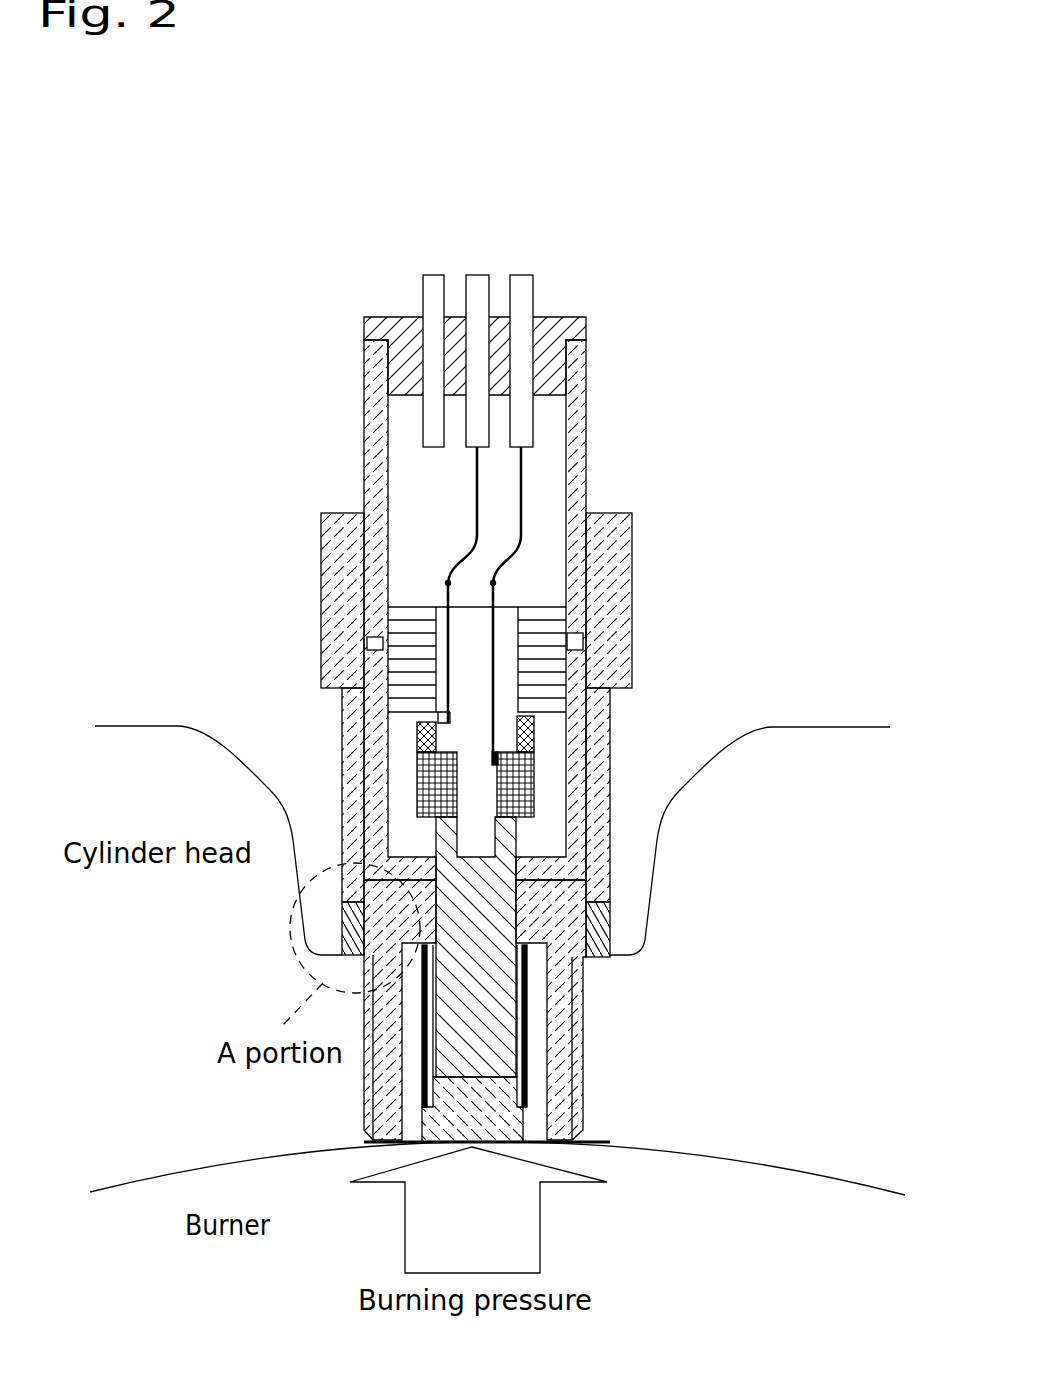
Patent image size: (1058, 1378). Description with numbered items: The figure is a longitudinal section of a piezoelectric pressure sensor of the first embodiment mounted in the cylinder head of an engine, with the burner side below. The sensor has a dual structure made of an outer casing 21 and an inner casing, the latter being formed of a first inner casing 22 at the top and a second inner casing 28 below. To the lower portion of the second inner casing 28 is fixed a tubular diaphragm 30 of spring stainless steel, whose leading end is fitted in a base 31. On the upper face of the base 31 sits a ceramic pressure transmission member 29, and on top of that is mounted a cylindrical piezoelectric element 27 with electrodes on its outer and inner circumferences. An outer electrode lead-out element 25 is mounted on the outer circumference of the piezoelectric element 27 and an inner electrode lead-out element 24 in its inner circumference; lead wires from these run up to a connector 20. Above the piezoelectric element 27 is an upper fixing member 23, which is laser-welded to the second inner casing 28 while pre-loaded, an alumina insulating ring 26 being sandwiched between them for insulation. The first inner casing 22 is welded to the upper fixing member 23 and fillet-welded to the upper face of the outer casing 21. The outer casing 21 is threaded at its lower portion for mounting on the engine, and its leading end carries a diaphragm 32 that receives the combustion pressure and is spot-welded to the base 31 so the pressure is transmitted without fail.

The connector 20 is at (567, 332).
The outer casing 21 is at (573, 563).
The first inner casing 22 is at (605, 521).
The upper fixing member 23 is at (540, 643).
The inner electrode lead-out element 24 is at (450, 708).
The outer electrode lead-out element 25 is at (455, 706).
The insulating ring 26 is at (537, 737).
The piezoelectric element 27 is at (543, 773).
The second inner casing 28 is at (535, 907).
The pressure transmission member 29 is at (487, 993).
The tubular diaphragm 30 is at (520, 1050).
The base 31 is at (503, 1122).
The diaphragm 32 is at (548, 1146).